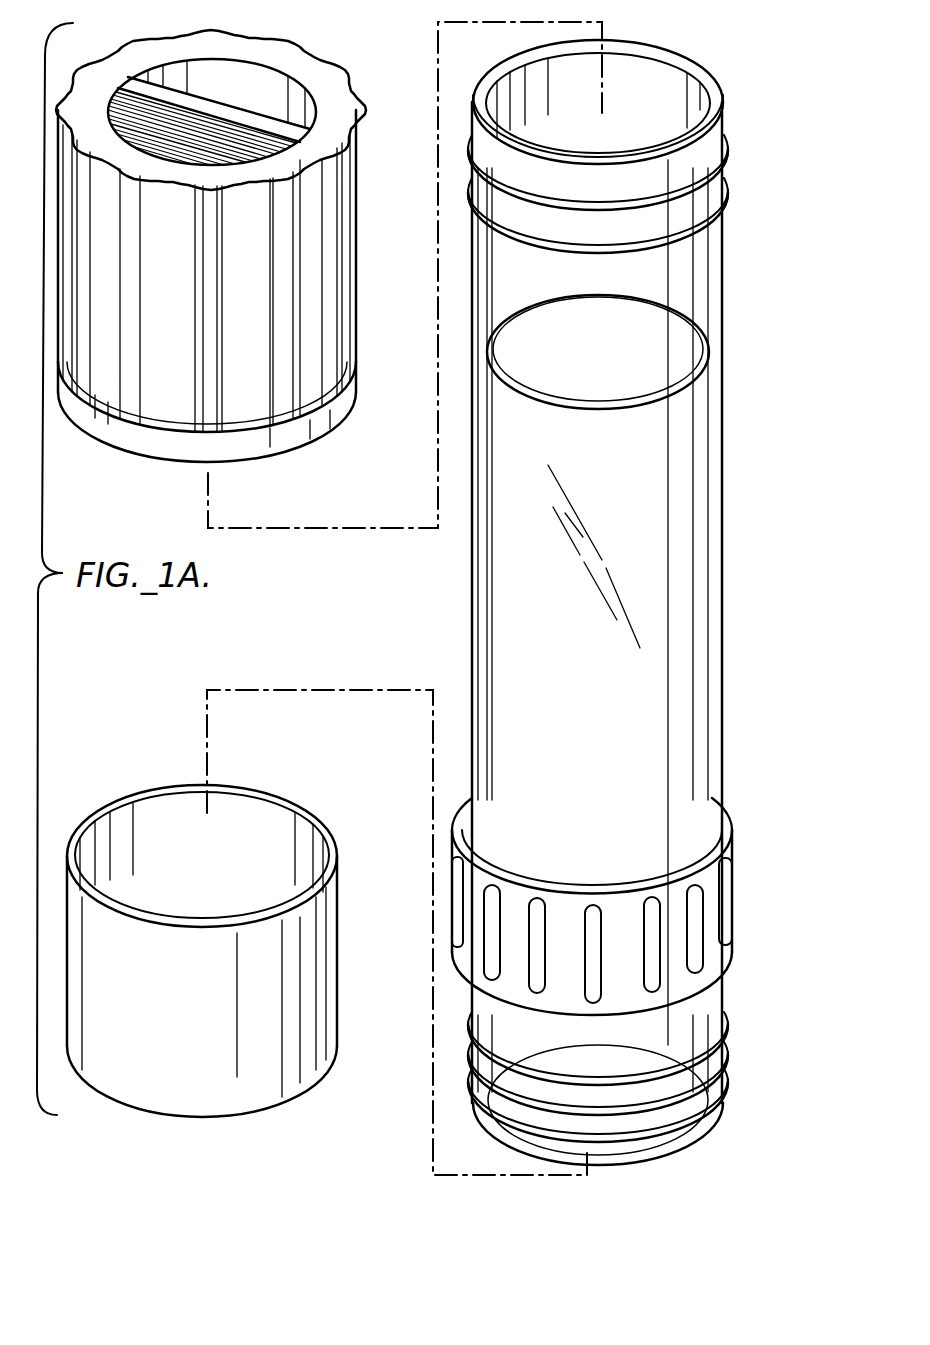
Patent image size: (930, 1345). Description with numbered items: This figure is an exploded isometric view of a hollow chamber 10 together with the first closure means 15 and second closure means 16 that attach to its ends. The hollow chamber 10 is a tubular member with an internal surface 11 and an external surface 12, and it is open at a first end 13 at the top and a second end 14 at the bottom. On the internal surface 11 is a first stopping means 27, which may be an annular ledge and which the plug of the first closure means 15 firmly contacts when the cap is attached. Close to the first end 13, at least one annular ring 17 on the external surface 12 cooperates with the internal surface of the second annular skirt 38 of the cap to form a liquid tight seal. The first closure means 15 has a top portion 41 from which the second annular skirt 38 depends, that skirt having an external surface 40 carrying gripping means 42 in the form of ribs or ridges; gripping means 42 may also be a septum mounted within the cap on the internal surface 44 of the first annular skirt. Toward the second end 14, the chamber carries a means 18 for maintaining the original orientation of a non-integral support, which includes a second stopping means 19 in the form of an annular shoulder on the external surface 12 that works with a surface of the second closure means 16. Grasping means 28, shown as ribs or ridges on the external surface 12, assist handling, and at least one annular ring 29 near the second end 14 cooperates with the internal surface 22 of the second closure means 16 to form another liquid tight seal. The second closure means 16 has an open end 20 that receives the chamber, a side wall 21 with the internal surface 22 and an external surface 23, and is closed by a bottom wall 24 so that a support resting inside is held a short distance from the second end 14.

The hollow chamber 10 is at (467, 593).
The internal surface 11 is at (695, 103).
The external surface 12 is at (712, 273).
The first end 13 is at (643, 82).
The second end 14 is at (668, 1160).
The first closure means 15 is at (170, 462).
The second closure means 16 is at (282, 797).
The annular ring 17 is at (728, 192).
The means for maintaining the original orientation of a non-integral support 18 is at (797, 1110).
The second stopping means 19 is at (720, 972).
The open end 20 is at (160, 817).
The side wall 21 is at (338, 853).
The internal surface 22 is at (315, 833).
The external surface 23 is at (337, 915).
The bottom wall 24 is at (273, 1107).
The first stopping means 27 is at (503, 330).
The grasping means 28 is at (660, 950).
The annular ring 29 is at (723, 1070).
The second annular skirt 38 is at (313, 337).
The external surface 40 is at (313, 277).
The top portion 41 is at (337, 108).
The gripping means 42 is at (268, 138).
The internal surface 44 is at (263, 78).